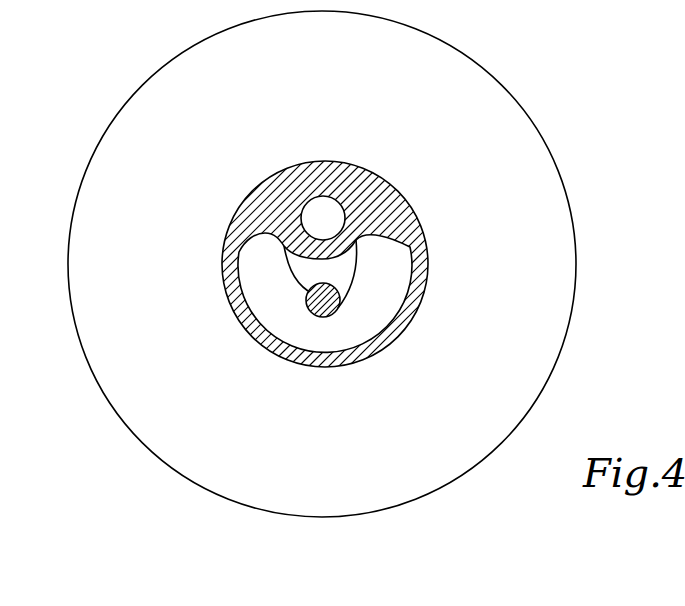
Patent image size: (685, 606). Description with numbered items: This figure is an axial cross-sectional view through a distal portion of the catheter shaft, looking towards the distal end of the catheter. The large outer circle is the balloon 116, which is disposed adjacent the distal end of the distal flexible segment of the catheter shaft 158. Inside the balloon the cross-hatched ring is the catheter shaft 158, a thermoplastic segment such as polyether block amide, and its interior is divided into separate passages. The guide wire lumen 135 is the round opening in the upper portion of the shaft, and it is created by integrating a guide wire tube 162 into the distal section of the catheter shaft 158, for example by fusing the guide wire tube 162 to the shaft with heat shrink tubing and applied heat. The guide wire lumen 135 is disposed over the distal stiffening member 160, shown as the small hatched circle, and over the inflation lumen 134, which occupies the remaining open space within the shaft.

The balloon 116 is at (498, 138).
The inflation lumen 134 is at (273, 297).
The guide wire lumen 135 is at (330, 220).
The catheter shaft 158 is at (327, 302).
The distal stiffening member 160 is at (343, 303).
The guide wire tube 162 is at (355, 241).